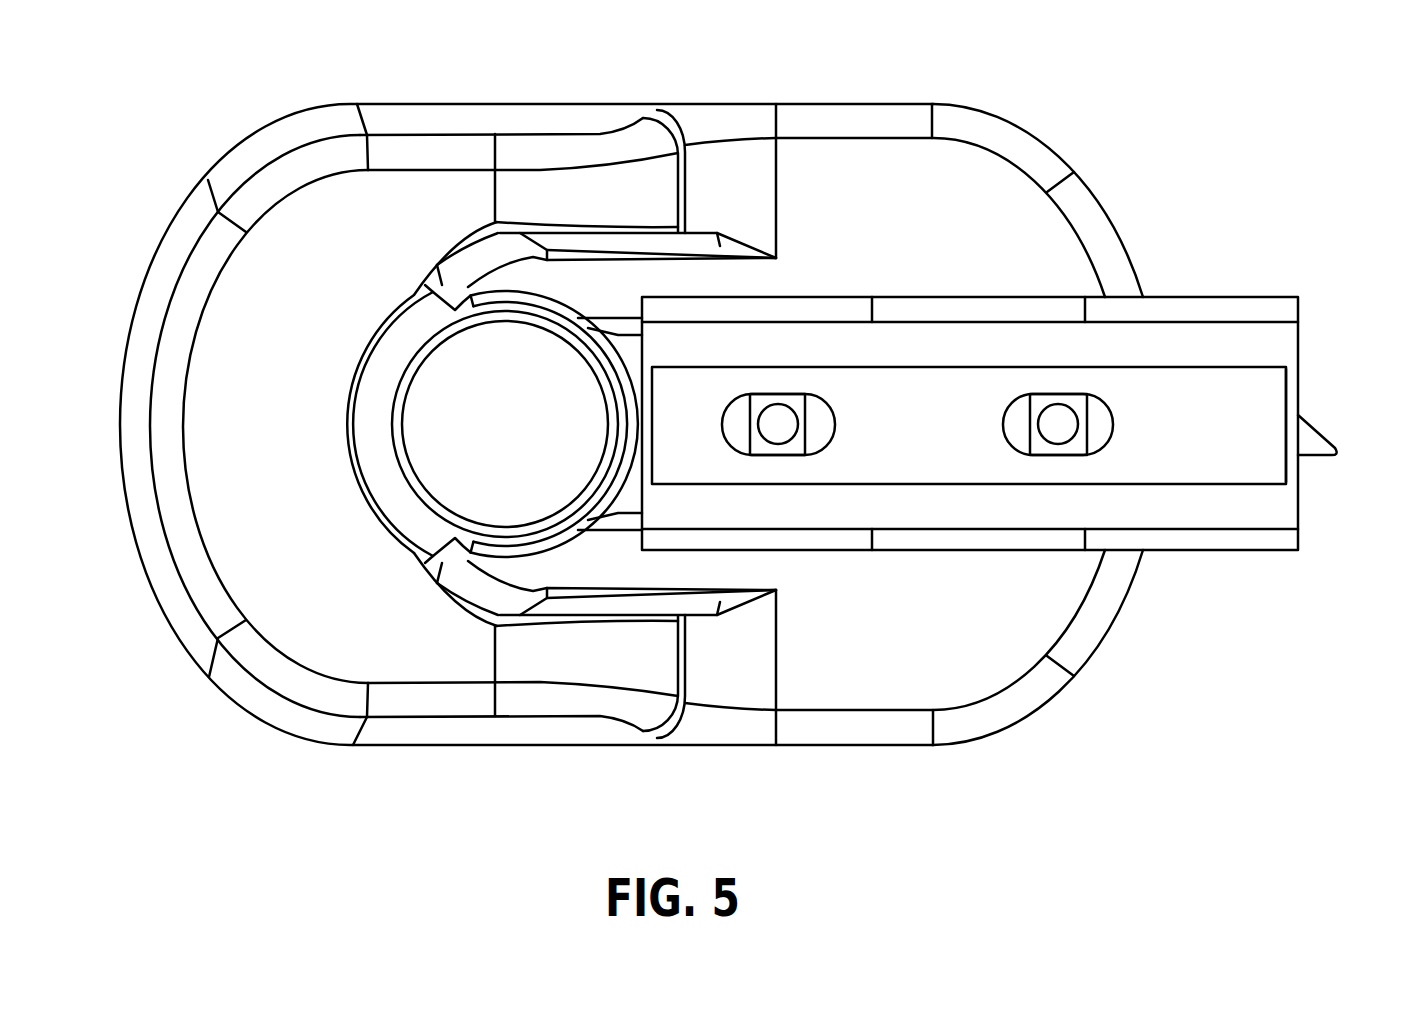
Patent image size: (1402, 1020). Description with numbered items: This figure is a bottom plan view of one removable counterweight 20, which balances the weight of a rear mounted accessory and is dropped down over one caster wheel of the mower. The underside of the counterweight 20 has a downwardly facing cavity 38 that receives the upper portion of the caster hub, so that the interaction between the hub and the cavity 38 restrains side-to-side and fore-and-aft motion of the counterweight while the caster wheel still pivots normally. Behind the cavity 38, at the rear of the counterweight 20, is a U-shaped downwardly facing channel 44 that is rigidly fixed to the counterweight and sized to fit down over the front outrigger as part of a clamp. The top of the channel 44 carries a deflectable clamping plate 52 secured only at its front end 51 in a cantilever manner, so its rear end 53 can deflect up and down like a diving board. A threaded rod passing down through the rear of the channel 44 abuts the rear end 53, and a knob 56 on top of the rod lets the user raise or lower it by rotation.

The counterweight 20 is at (430, 160).
The cavity 38 is at (523, 438).
The channel 44 is at (1017, 379).
The front end 51 is at (667, 420).
The clamping plate 52 is at (938, 445).
The rear end 53 is at (1248, 405).
The knob 56 is at (1298, 417).